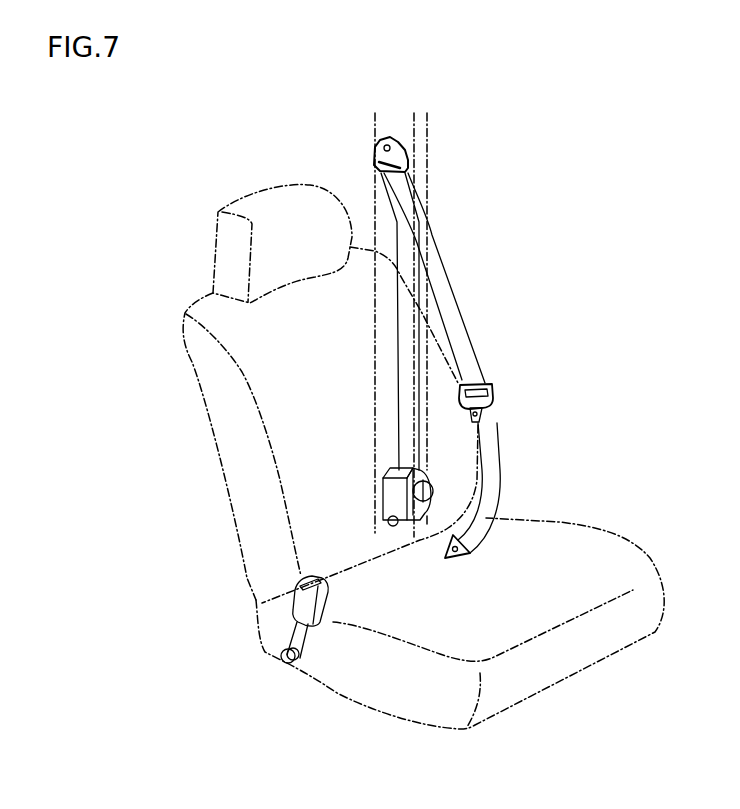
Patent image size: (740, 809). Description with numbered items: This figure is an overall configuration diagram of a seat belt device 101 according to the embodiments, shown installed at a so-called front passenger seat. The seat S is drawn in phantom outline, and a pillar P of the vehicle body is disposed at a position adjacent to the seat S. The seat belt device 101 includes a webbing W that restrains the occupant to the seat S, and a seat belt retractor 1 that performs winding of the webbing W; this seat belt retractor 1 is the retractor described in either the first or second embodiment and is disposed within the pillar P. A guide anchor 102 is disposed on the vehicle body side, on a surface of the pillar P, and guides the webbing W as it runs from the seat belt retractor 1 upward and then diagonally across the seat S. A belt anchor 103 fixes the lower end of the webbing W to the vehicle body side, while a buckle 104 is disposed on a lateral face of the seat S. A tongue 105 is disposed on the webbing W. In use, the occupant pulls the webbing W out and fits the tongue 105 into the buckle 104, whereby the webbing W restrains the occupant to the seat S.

The seat S is at (160, 277).
The pillar P is at (422, 133).
The webbing W is at (443, 280).
The seat belt device 101 is at (393, 400).
The guide anchor 102 is at (378, 150).
The belt anchor 103 is at (458, 562).
The buckle 104 is at (297, 594).
The tongue 105 is at (494, 400).
The seat belt retractor 1 is at (397, 493).